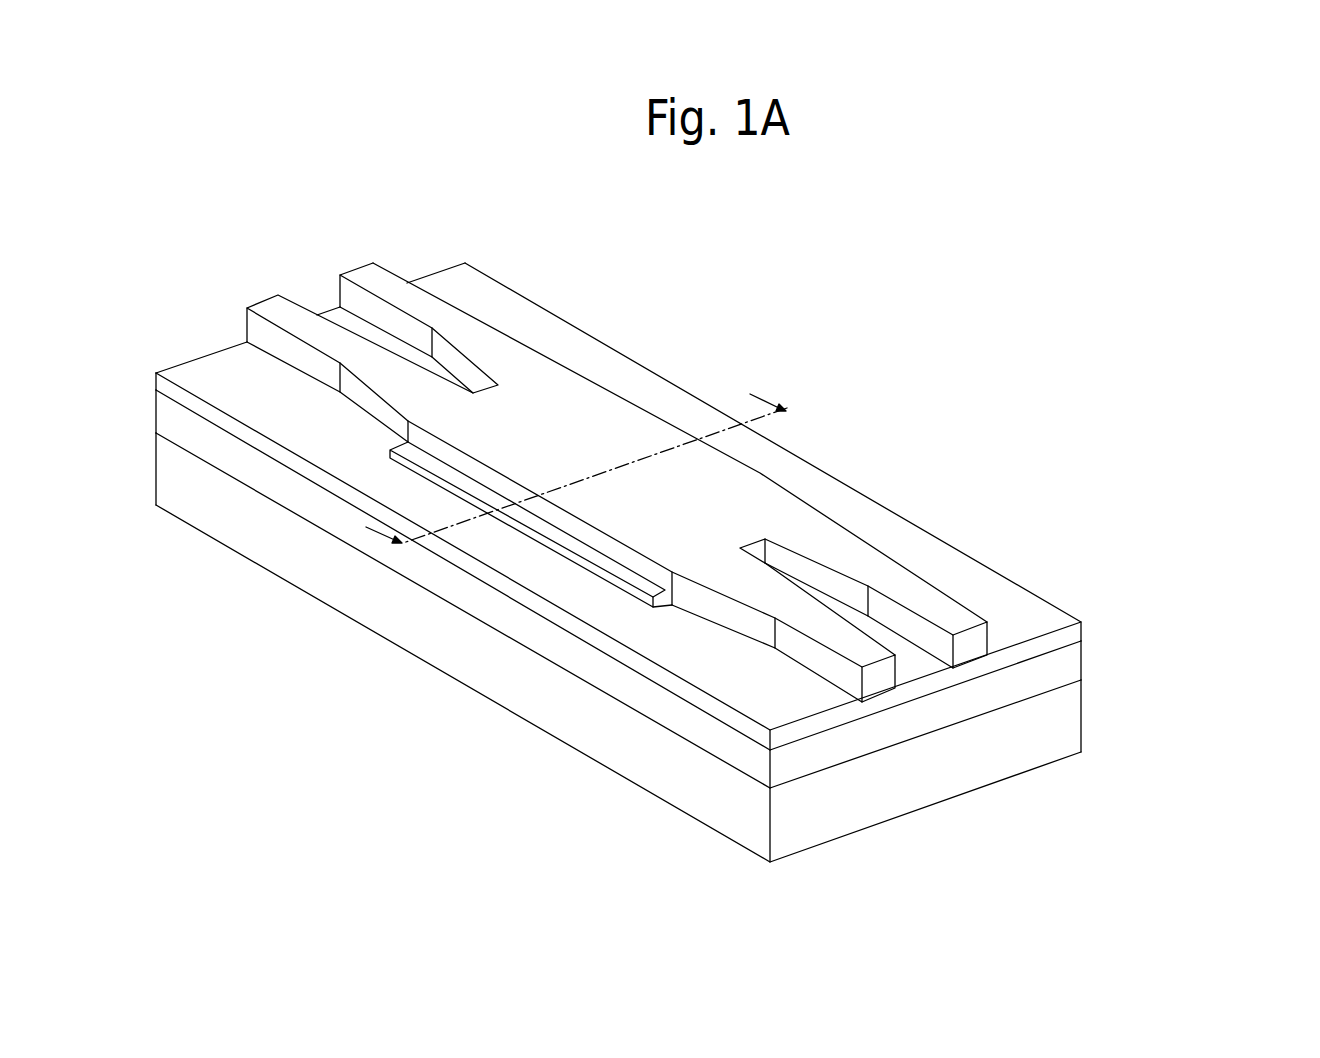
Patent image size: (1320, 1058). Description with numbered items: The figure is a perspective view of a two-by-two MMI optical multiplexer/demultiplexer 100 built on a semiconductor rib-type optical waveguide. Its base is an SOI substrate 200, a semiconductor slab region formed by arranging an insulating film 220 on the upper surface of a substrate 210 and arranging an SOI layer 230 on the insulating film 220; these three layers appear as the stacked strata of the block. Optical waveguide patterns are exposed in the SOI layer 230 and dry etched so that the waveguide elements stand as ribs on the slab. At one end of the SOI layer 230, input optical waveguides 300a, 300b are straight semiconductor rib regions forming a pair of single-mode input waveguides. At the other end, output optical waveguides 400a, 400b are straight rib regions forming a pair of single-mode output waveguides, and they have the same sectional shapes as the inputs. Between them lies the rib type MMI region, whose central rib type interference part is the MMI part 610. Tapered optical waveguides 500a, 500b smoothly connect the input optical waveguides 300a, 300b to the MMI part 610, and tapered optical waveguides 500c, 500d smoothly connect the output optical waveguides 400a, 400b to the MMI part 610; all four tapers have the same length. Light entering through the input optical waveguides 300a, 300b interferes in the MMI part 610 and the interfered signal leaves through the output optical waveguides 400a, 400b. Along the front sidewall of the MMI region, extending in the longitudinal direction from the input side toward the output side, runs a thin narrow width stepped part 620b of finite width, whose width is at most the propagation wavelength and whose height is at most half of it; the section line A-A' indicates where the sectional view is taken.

The 2×2 MMI optical multiplexer/demultiplexer 100 is at (918, 240).
The SOI substrate 200 is at (1181, 607).
The substrate 210 is at (1075, 708).
The insulating film 220 is at (1075, 672).
The SOI layer 230 is at (1075, 635).
The input optical waveguide 300a is at (367, 275).
The input optical waveguide 300b is at (273, 310).
The output optical waveguide 400a is at (862, 653).
The output optical waveguide 400b is at (975, 607).
The tapered optical waveguide 500a is at (450, 322).
The tapered optical waveguide 500b is at (433, 393).
The tapered optical waveguide 500c is at (805, 520).
The tapered optical waveguide 500d is at (908, 590).
The MMI part 610 is at (598, 398).
The narrow width stepped part 620b is at (653, 592).